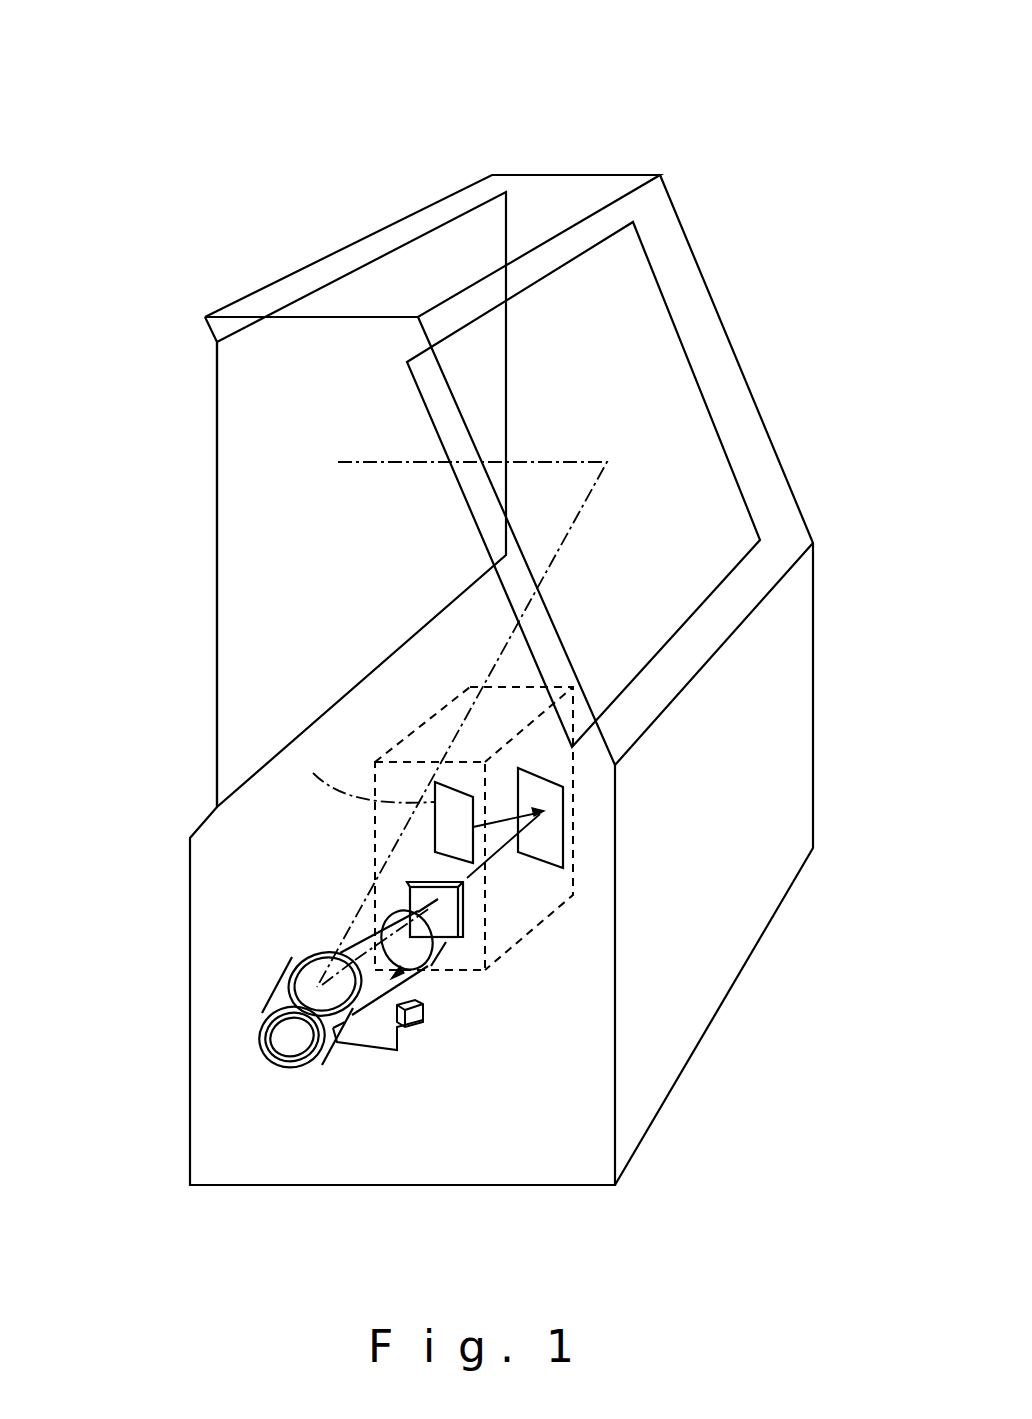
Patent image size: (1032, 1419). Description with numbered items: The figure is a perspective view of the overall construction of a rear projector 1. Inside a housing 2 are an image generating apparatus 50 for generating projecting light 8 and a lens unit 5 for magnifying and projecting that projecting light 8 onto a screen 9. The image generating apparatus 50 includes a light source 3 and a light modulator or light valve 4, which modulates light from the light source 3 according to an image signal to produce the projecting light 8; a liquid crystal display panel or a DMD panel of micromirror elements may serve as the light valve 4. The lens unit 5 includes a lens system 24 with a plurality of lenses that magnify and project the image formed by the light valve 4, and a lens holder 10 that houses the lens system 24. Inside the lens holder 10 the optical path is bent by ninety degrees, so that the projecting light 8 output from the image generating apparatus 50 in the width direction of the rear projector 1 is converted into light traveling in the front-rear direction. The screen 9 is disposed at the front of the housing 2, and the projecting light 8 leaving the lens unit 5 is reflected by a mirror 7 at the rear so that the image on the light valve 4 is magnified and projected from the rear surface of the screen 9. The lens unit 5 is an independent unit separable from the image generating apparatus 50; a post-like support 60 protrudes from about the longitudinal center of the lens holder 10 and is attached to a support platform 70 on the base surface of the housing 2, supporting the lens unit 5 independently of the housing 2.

The rear projector 1 is at (603, 146).
The housing 2 is at (667, 990).
The light source 3 is at (455, 785).
The light modulator (light valve) 4 is at (552, 818).
The lens unit 5 is at (407, 967).
The mirror 7 is at (705, 460).
The projecting light 8 is at (313, 773).
The screen 9 is at (215, 485).
The lens holder 10 is at (322, 983).
The lens system 24 is at (423, 983).
The image generating apparatus 50 is at (418, 742).
The support 60 is at (413, 1026).
The support platform 70 is at (377, 1037).